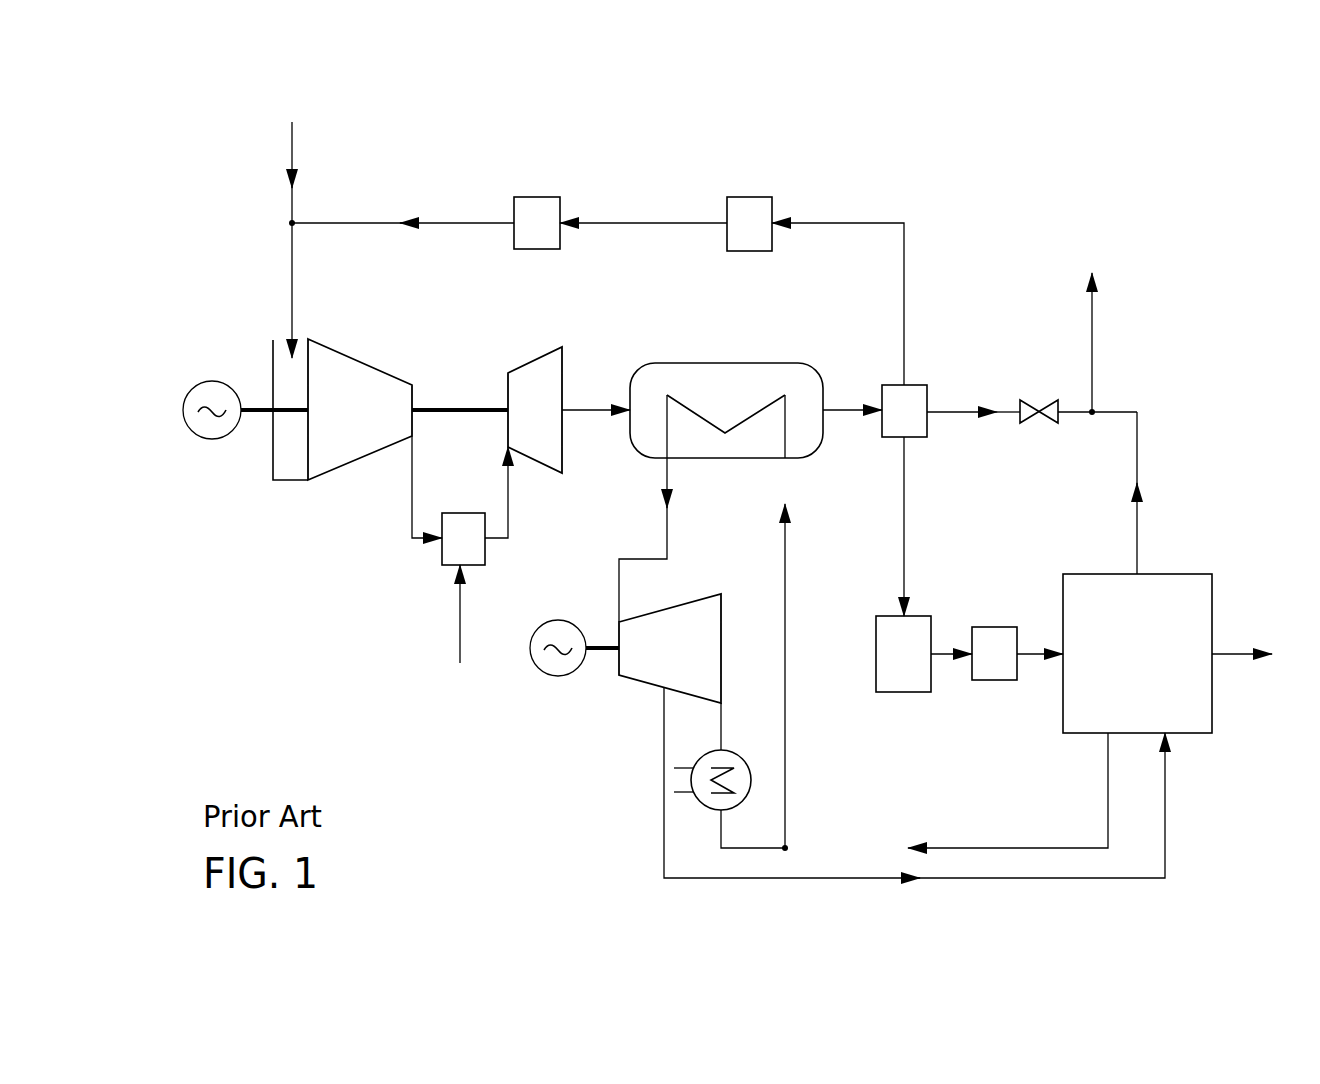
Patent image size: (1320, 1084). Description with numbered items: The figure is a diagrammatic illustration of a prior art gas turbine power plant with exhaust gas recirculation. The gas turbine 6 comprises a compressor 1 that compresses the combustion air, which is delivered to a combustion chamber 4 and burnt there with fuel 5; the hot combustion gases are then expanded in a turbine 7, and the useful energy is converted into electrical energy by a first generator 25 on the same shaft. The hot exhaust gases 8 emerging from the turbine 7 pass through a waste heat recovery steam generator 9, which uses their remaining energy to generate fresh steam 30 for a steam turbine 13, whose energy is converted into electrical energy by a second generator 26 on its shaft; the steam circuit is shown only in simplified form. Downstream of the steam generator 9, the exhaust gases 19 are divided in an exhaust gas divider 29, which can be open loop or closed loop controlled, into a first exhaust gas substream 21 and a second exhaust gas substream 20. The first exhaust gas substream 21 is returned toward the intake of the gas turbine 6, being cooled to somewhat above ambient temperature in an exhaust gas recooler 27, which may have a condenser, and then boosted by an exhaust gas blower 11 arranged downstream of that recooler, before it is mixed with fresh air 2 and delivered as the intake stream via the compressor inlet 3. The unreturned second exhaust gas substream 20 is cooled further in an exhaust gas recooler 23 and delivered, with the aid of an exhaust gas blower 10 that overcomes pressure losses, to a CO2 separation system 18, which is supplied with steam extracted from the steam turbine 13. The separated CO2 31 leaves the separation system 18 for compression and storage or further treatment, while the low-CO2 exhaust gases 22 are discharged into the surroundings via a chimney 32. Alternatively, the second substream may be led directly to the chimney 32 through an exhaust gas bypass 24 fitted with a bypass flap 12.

The compressor 1 is at (349, 423).
The fresh air 2 is at (290, 145).
The compressor inlet 3 is at (290, 450).
The combustion chamber 4 is at (453, 551).
The fuel 5 is at (460, 630).
The gas turbine 6 is at (450, 368).
The turbine 7 is at (527, 423).
The hot exhaust gases 8 is at (583, 410).
The waste heat recovery steam generator 9 is at (717, 405).
The exhaust gas blower 10 is at (1007, 666).
The exhaust gas blower 11 is at (550, 236).
The bypass flap 12 is at (1040, 407).
The steam turbine 13 is at (683, 658).
The CO2 separation system 18 is at (1150, 667).
The flue gas line 19 is at (842, 410).
The second exhaust gas substream 20 is at (913, 528).
The first exhaust gas substream 21 is at (842, 223).
The low-CO2 exhaust gases 22 is at (1120, 408).
The exhaust gas recooler 23 is at (916, 666).
The exhaust gas bypass 24 is at (968, 407).
The first generator 25 is at (212, 425).
The second generator 26 is at (558, 668).
The exhaust gas recooler 27 is at (762, 236).
The exhaust gas divider 29 is at (917, 423).
The fresh steam 30 is at (669, 532).
The CO2 31 is at (1233, 657).
The chimney 32 is at (1097, 329).